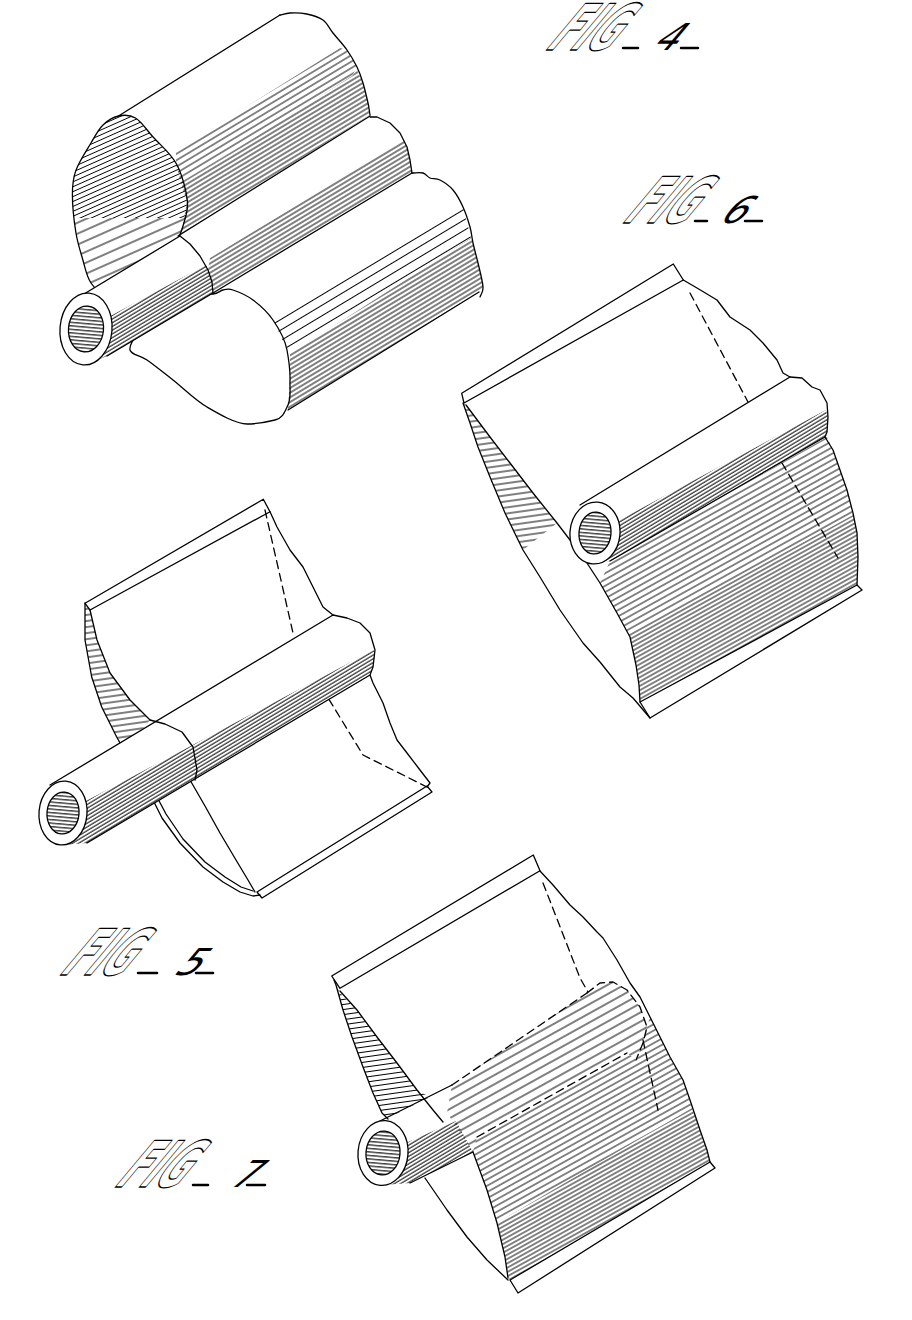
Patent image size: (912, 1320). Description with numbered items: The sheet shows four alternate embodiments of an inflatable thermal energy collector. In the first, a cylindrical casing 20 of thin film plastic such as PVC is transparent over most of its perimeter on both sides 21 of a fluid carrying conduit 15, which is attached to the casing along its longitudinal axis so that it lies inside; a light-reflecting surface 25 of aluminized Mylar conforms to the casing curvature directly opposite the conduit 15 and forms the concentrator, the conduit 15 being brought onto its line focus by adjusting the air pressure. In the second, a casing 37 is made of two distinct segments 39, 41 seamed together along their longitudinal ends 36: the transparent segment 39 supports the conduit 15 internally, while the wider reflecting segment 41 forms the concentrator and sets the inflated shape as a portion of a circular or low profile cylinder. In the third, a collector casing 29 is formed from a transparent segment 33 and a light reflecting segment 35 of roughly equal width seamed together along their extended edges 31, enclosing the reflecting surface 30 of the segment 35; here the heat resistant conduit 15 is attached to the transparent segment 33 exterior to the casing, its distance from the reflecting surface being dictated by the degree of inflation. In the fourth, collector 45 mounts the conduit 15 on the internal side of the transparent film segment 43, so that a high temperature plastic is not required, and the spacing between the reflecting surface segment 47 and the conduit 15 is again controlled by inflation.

In FIG. 4, the fluid carrying conduit 15 is at (106, 368).
In FIG. 6, the fluid carrying conduit 15 is at (807, 447).
In FIG. 5, the fluid carrying conduit 15 is at (65, 845).
In FIG. 7, the fluid carrying conduit 15 is at (400, 1188).
In FIG. 4, the cylindrical casing 20 is at (434, 175).
In FIG. 4, the transparent sides of casing 21 is at (212, 80).
In FIG. 4, the light-reflecting surface 25 is at (190, 373).
In FIG. 6, the thermal energy collector casing 29 is at (670, 497).
In FIG. 6, the reflecting surface 30 is at (577, 573).
In FIG. 6, the extended edges 31 is at (548, 338).
In FIG. 7, the extended edges 31 is at (430, 917).
In FIG. 6, the transparent segment 33 is at (757, 603).
In FIG. 6, the light reflecting segment 35 is at (505, 476).
In FIG. 5, the longitudinal ends 36 is at (187, 543).
In FIG. 5, the casing 37 is at (277, 696).
In FIG. 5, the transparent segment 39 is at (363, 755).
In FIG. 5, the reflecting segment 41 is at (183, 820).
In FIG. 7, the transparent film segment 43 is at (683, 1103).
In FIG. 7, the collector 45 is at (540, 1074).
In FIG. 7, the reflecting surface segment 47 is at (407, 1130).